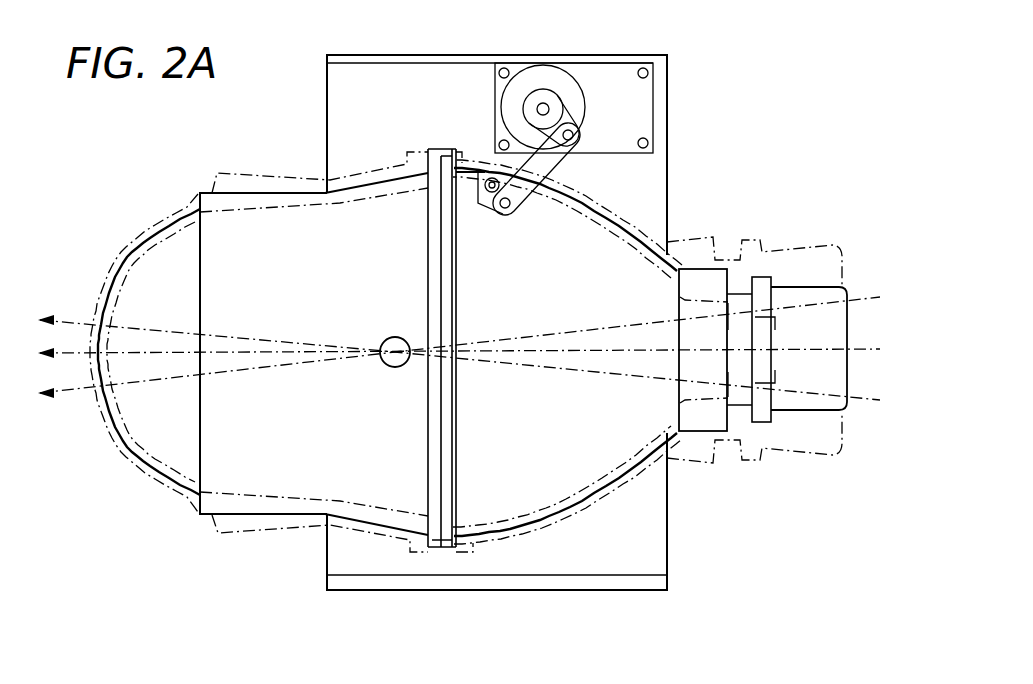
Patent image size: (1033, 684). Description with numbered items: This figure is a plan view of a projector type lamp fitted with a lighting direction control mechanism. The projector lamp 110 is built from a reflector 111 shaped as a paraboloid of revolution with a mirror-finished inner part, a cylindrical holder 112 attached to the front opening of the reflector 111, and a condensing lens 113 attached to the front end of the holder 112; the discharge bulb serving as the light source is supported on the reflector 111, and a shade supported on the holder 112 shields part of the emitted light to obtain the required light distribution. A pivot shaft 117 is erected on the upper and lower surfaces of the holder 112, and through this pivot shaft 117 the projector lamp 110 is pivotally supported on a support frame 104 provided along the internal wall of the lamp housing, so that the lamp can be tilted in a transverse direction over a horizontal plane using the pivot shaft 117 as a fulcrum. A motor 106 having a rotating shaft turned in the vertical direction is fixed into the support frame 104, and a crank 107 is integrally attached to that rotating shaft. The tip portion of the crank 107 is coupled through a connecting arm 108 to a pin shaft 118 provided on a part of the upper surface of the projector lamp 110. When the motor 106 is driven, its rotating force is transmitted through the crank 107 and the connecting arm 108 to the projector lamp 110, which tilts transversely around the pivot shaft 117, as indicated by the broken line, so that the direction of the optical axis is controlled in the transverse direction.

The support frame 104 is at (458, 578).
The motor 106 is at (562, 85).
The crank 107 is at (562, 114).
The connecting arm 108 is at (562, 170).
The projector lamp 110 is at (255, 517).
The reflector 111 is at (553, 487).
The holder 112 is at (394, 508).
The condensing lens 113 is at (167, 455).
The pivot shaft 117 is at (394, 368).
The pin shaft 118 is at (491, 177).